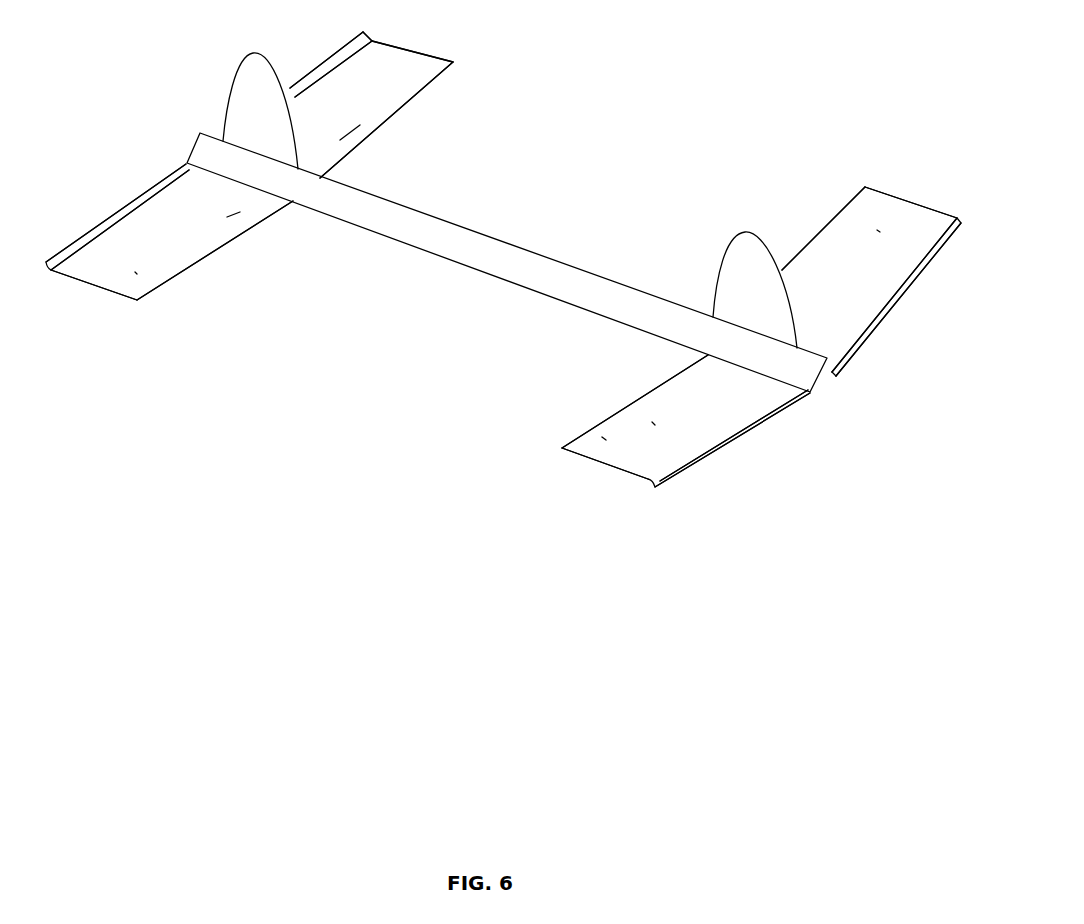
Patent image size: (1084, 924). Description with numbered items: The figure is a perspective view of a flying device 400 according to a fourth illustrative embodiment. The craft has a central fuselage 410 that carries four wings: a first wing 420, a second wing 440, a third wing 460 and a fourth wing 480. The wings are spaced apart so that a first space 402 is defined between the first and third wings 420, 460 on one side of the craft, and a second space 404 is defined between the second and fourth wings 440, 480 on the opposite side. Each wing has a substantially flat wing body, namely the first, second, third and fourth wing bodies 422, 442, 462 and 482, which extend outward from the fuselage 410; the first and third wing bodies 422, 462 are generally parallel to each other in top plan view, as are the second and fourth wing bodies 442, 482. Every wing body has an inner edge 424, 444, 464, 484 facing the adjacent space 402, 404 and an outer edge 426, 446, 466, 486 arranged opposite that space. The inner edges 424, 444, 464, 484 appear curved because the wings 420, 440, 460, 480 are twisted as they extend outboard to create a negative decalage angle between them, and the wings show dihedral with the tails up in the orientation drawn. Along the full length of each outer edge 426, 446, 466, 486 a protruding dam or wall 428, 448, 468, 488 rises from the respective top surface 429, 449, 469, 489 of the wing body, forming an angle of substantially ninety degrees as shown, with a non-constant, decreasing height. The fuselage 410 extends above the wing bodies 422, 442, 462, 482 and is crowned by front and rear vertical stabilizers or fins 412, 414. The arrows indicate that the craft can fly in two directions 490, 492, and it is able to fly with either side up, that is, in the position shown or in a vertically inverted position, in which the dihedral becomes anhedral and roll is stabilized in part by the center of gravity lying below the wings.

The flying device 400 is at (598, 45).
The first space 402 is at (434, 346).
The second space 404 is at (566, 197).
The fuselage 410 is at (458, 270).
The front vertical stabilizer or fin 412 is at (727, 262).
The rear vertical stabilizer or fin 414 is at (238, 107).
The first wing 420 is at (718, 459).
The first wing body 422 is at (602, 437).
The inner edge of first wing body 424 is at (670, 375).
The outer edge of first wing body 426 is at (642, 477).
The protruding dam or wall of first wing 428 is at (682, 467).
The top surface of first wing body 429 is at (652, 422).
The second wing 440 is at (874, 329).
The second wing body 442 is at (835, 233).
The inner edge of second wing body 444 is at (843, 205).
The outer edge of second wing body 446 is at (835, 360).
The protruding dam or wall of second wing 448 is at (893, 293).
The top surface of second wing body 449 is at (877, 230).
The third wing 460 is at (168, 289).
The third wing body 462 is at (227, 217).
The inner edge of third wing body 464 is at (210, 250).
The outer edge of third wing body 466 is at (80, 252).
The protruding dam or wall of third wing 468 is at (103, 223).
The top surface of third wing body 469 is at (135, 272).
The fourth wing 480 is at (394, 116).
The fourth wing body 482 is at (340, 140).
The inner edge of fourth wing body 484 is at (433, 78).
The outer edge of fourth wing body 486 is at (367, 37).
The protruding dam or wall of fourth wing 488 is at (333, 43).
The top surface of fourth wing body 489 is at (398, 75).
The first flight direction 490 is at (899, 405).
The second flight direction 492 is at (180, 143).